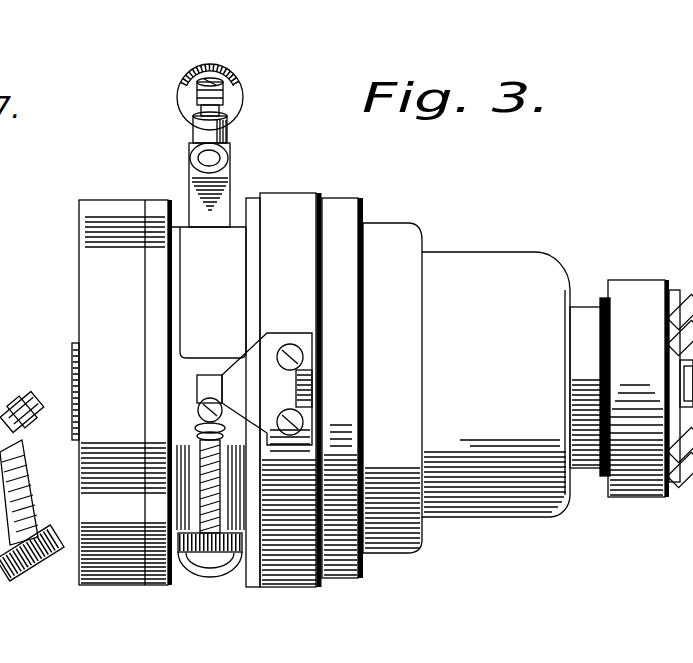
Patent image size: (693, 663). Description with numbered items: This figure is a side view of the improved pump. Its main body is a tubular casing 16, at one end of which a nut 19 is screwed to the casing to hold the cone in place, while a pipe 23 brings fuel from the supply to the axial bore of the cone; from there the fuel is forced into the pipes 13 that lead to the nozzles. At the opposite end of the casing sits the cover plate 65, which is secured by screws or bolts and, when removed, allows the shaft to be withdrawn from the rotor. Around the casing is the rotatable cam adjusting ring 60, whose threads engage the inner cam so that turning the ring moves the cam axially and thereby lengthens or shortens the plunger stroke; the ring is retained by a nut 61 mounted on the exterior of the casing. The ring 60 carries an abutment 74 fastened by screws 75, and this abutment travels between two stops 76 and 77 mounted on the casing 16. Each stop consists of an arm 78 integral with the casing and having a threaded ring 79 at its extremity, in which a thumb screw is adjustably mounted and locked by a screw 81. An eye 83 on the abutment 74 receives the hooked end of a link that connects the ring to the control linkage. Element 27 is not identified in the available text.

The pipes 13 is at (685, 300).
The tubular casing 16 is at (545, 245).
The nut 19 is at (618, 290).
The pipe 23 is at (668, 375).
The adjusting screw 27 is at (32, 468).
The cam adjusting ring 60 is at (277, 203).
The nut 61 is at (348, 205).
The cover plate 65 is at (82, 240).
The abutment 74 is at (250, 378).
The screws 75 is at (290, 344).
The stop 76 is at (190, 158).
The stop 77 is at (198, 418).
The arm 78 is at (205, 187).
The threaded ring 79 is at (191, 140).
The screw 81 is at (195, 98).
The eye 83 is at (323, 377).